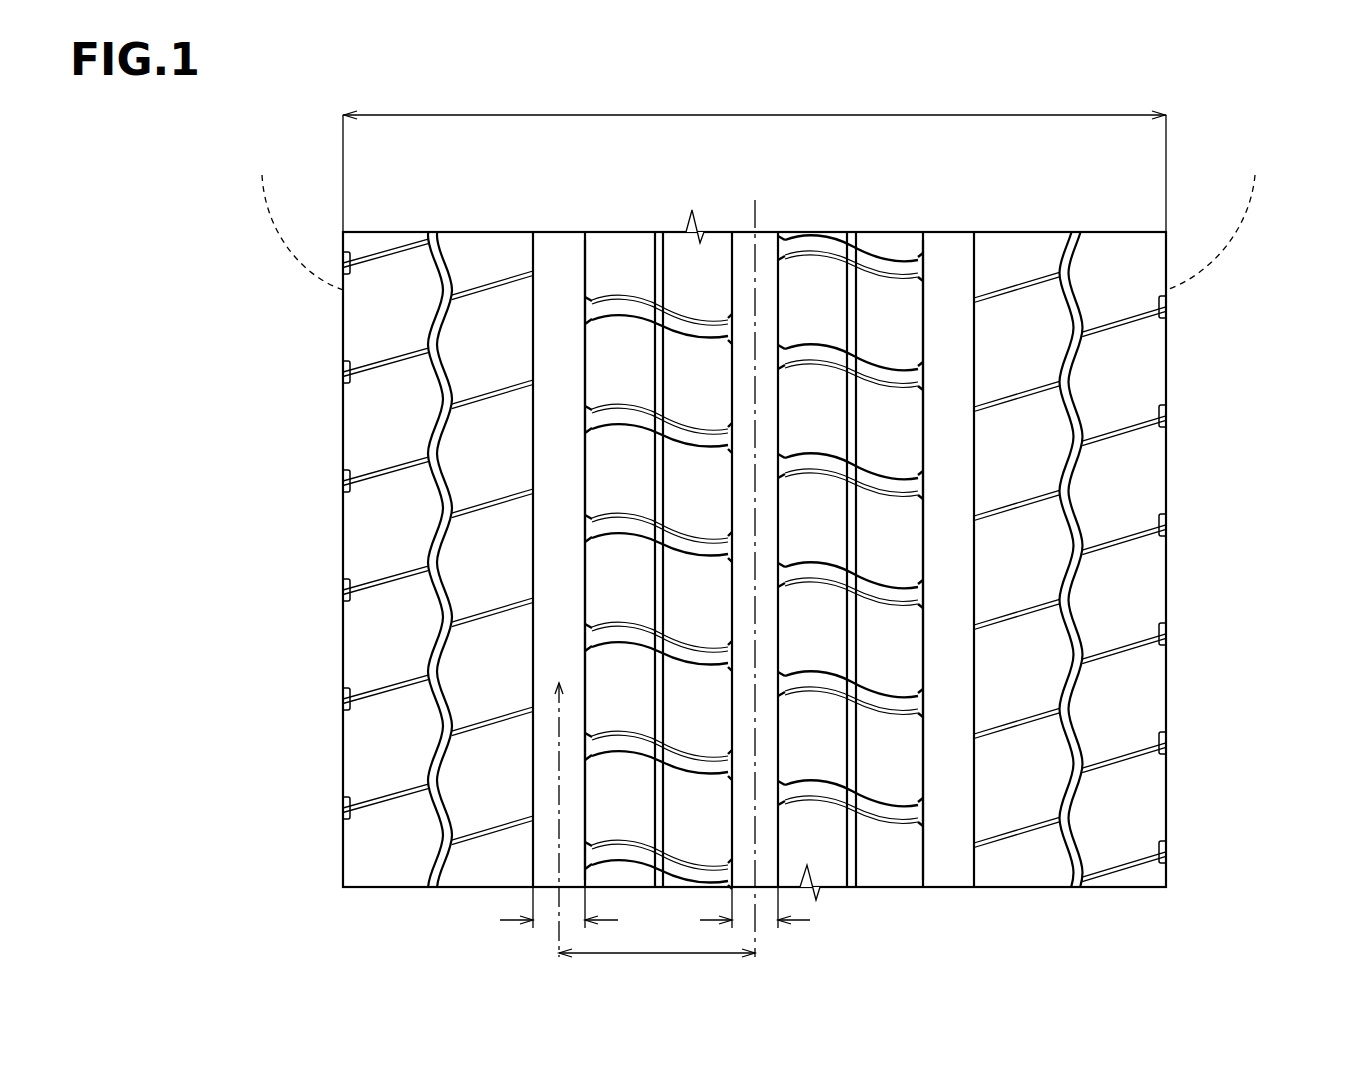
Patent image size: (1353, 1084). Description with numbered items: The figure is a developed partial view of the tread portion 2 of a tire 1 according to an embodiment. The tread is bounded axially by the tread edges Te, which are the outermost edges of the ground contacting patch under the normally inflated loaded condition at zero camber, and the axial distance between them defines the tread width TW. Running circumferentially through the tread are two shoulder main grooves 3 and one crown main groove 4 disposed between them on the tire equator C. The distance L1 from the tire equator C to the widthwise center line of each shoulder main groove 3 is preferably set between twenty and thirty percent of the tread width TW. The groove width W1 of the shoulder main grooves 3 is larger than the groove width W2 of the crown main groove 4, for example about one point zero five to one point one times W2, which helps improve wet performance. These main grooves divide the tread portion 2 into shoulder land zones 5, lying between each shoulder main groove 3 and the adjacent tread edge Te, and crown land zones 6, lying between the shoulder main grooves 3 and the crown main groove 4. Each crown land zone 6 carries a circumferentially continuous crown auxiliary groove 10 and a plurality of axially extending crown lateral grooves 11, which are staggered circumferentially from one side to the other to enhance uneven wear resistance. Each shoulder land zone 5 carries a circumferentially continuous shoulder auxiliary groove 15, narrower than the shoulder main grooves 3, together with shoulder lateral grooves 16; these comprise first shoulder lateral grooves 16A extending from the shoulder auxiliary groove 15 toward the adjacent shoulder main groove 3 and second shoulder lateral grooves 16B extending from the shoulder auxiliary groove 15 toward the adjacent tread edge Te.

The tire 1 is at (1003, 216).
The tread portion 2 is at (614, 231).
The shoulder main groove 3 is at (548, 272).
The crown main groove 4 is at (766, 270).
The shoulder land zone 5 is at (465, 265).
The crown land zone 6 is at (640, 278).
The crown auxiliary groove 10 is at (659, 268).
The crown lateral groove 11 is at (630, 420).
The shoulder auxiliary groove 15 is at (438, 253).
The shoulder lateral groove 16 is at (758, 560).
The first shoulder lateral groove 16A is at (490, 398).
The second shoulder lateral groove 16B is at (390, 362).
The tire equator C is at (755, 563).
The tread width TW is at (754, 157).
The tread edge Te is at (756, 216).
The groove width of shoulder main groove W1 is at (535, 921).
The groove width of crown main groove W2 is at (757, 921).
The distance from tire equator to shoulder main groove center L1 is at (655, 820).